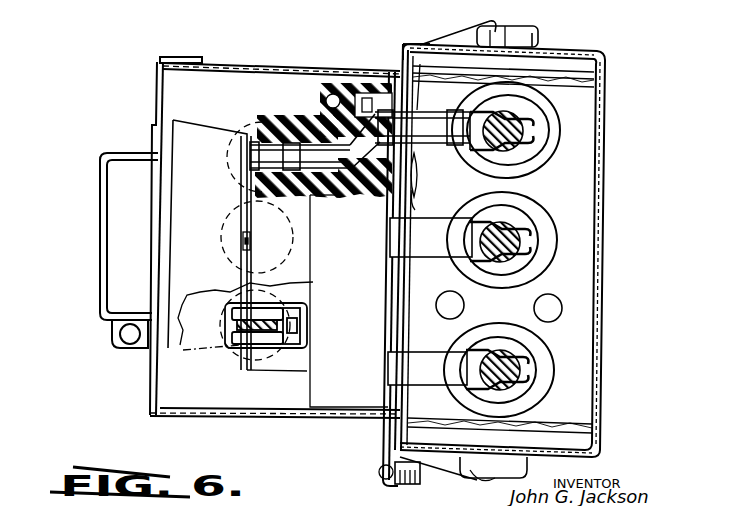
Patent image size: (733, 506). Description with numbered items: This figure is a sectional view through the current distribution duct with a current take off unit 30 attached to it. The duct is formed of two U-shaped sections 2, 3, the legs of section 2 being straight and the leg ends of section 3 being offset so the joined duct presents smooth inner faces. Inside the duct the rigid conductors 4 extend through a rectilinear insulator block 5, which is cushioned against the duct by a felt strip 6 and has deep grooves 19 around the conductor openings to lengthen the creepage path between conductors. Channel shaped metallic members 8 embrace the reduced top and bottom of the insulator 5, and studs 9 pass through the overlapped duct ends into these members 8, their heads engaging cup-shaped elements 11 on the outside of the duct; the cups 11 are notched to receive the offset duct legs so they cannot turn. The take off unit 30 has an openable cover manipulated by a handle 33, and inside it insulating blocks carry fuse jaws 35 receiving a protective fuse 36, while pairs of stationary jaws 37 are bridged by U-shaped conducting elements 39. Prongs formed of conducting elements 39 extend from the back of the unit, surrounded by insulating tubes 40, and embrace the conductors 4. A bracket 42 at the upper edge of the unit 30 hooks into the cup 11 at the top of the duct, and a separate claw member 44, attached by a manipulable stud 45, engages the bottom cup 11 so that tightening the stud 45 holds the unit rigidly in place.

The U-shaped section 2 is at (450, 50).
The U-shaped section 3 is at (585, 54).
The conductor section 4 is at (522, 152).
The insulator block 5 is at (580, 130).
The felt strip 6 is at (598, 96).
The channel shaped metallic member 8 is at (565, 68).
The stud 9 is at (510, 27).
The cup-shaped element 11 is at (530, 40).
The groove 19 is at (548, 112).
The current take off unit 30 is at (290, 68).
The handle 33 is at (100, 283).
The fuse jaw 35 is at (238, 305).
The protective fuse 36 is at (252, 135).
The stationary jaw 37 is at (305, 120).
The U-shaped conducting bridging element 39 is at (213, 181).
The insulating tube 40 is at (442, 226).
The bracket 42 is at (425, 44).
The claw member 44 is at (447, 468).
The manipulable stud 45 is at (407, 476).